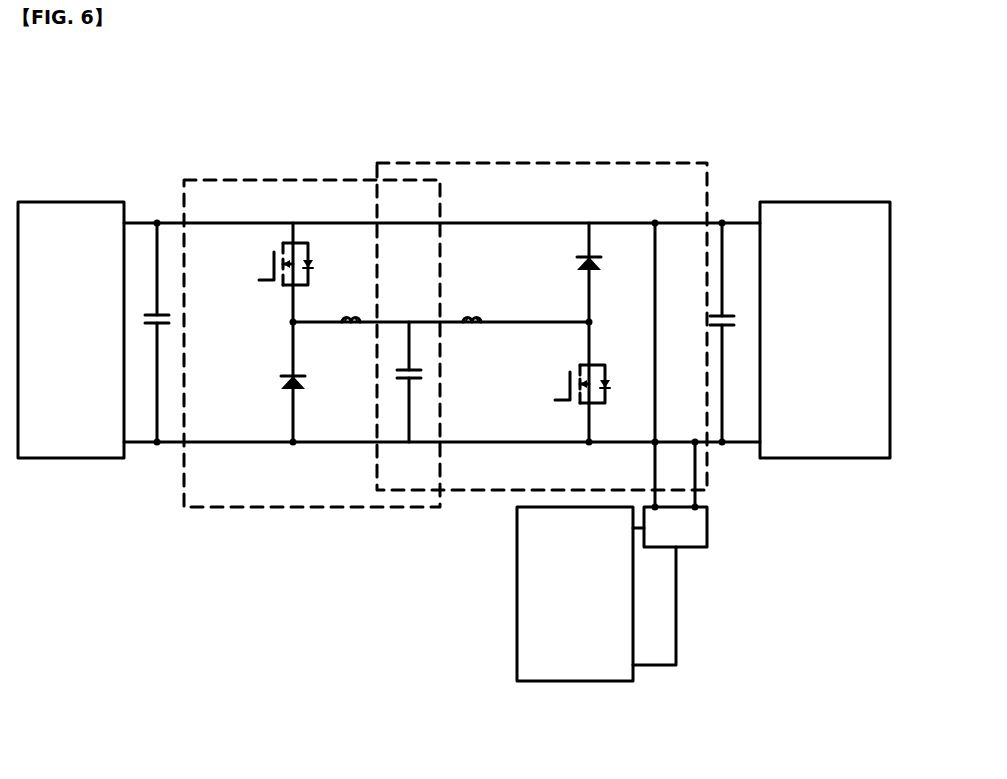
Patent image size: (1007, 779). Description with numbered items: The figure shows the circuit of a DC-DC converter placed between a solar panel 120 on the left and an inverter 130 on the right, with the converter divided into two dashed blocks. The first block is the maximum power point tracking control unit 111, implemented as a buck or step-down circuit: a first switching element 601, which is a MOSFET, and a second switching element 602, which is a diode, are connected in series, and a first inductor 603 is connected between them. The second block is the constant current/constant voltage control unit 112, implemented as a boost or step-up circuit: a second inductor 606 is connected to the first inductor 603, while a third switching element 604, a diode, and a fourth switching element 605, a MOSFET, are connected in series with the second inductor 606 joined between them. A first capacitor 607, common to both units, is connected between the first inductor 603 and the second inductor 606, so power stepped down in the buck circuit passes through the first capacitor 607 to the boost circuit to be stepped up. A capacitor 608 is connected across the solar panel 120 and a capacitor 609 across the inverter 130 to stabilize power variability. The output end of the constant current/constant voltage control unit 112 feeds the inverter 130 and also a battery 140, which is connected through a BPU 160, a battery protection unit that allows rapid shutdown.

The maximum power point tracking control unit 111 is at (306, 180).
The constant current/constant voltage control unit 112 is at (542, 163).
The solar panel 120 is at (72, 202).
The inverter 130 is at (822, 202).
The battery 140 is at (516, 593).
The BPU 160 is at (708, 527).
The first switching element 601 is at (306, 245).
The second switching element 602 is at (300, 384).
The first inductor 603 is at (351, 312).
The third switching element 604 is at (584, 256).
The fourth switching element 605 is at (568, 386).
The second inductor 606 is at (477, 311).
The first capacitor 607 is at (415, 380).
The capacitor 608 is at (170, 324).
The capacitor 609 is at (718, 316).